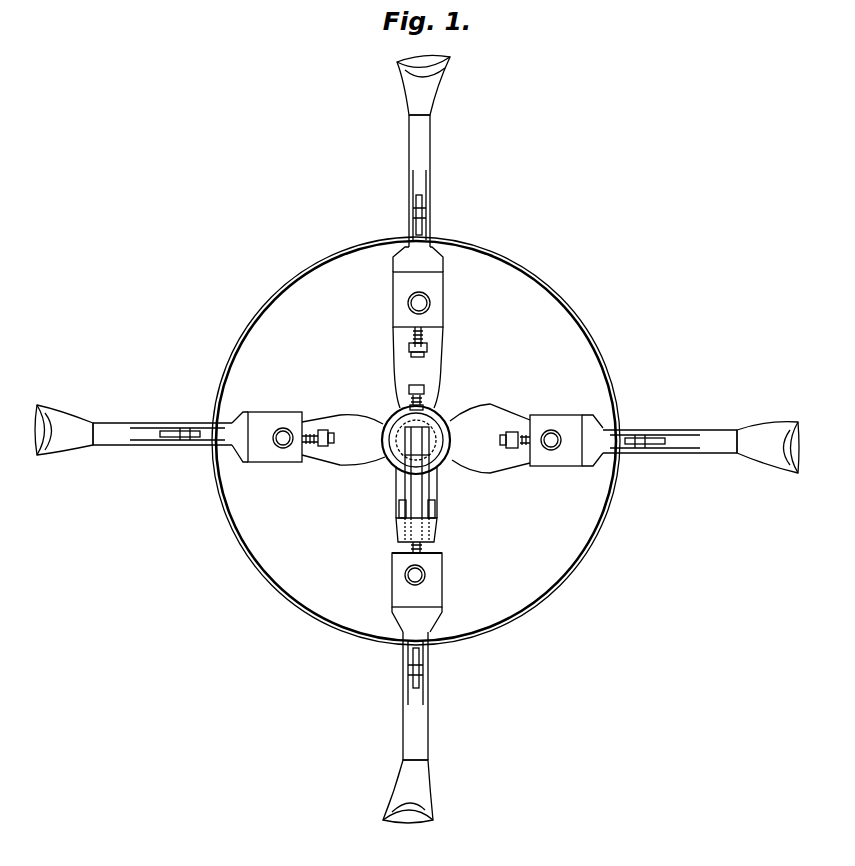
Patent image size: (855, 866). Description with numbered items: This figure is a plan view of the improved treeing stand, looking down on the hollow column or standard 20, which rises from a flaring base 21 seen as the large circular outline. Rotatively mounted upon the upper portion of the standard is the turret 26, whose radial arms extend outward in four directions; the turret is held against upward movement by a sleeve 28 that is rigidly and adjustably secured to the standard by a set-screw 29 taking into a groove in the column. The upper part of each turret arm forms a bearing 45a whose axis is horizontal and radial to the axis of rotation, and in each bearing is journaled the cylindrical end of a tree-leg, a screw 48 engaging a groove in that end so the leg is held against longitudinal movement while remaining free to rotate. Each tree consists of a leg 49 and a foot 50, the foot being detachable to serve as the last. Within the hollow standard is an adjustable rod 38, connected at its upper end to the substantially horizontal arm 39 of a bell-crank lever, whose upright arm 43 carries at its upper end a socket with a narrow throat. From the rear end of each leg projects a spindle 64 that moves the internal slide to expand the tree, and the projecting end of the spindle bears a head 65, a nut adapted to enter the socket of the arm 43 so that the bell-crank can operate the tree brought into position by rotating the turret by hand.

The hollow column or standard 20 is at (402, 420).
The flaring base 21 is at (606, 545).
The turret 26 is at (372, 465).
The sleeve 28 is at (441, 423).
The set-screw 29 is at (437, 396).
The adjustable rod 38 is at (428, 446).
The horizontal arm of bell-crank lever 39 is at (418, 486).
The upright arm of bell-crank 43 is at (436, 527).
The bearing 45a is at (443, 580).
The screw 48 is at (431, 303).
The leg 49 is at (425, 151).
The foot 50 is at (417, 439).
The spindle 64 is at (426, 338).
The head 65 is at (409, 347).